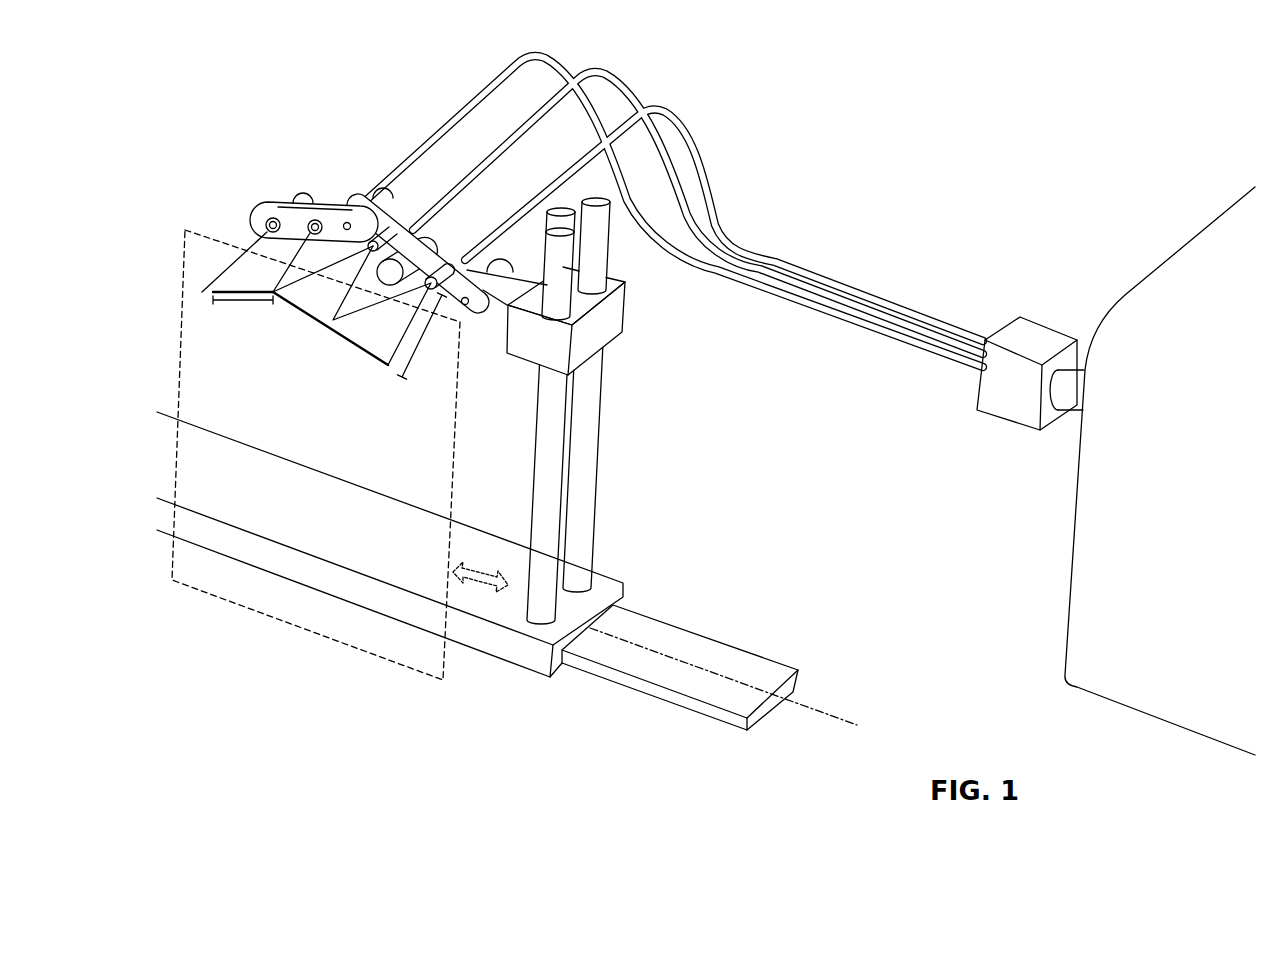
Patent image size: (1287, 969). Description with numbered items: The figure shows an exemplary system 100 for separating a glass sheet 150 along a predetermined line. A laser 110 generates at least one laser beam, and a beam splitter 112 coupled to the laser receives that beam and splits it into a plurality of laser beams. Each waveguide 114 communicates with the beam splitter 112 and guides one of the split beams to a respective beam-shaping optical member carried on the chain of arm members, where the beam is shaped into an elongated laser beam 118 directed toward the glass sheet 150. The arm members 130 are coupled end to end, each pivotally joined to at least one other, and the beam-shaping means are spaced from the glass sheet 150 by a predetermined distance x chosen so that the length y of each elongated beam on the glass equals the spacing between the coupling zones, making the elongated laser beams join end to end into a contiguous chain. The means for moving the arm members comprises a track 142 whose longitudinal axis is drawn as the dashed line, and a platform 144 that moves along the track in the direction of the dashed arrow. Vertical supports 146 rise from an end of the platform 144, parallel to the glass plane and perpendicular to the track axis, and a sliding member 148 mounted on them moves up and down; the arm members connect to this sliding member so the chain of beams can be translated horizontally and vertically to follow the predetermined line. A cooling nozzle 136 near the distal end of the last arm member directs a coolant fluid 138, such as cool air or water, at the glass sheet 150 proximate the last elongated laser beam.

The system 100 is at (982, 158).
The laser 110 is at (1181, 525).
The beam splitter 112 is at (1021, 333).
The waveguide 114 is at (722, 262).
The elongated laser beam 118 is at (322, 293).
The arm member 130 is at (365, 185).
The cooling nozzle 136 is at (268, 220).
The coolant fluid 138 is at (255, 238).
The track 142 is at (700, 650).
The platform 144 is at (515, 645).
The vertical support 146 is at (548, 493).
The sliding member 148 is at (602, 323).
The glass sheet 150 is at (340, 643).